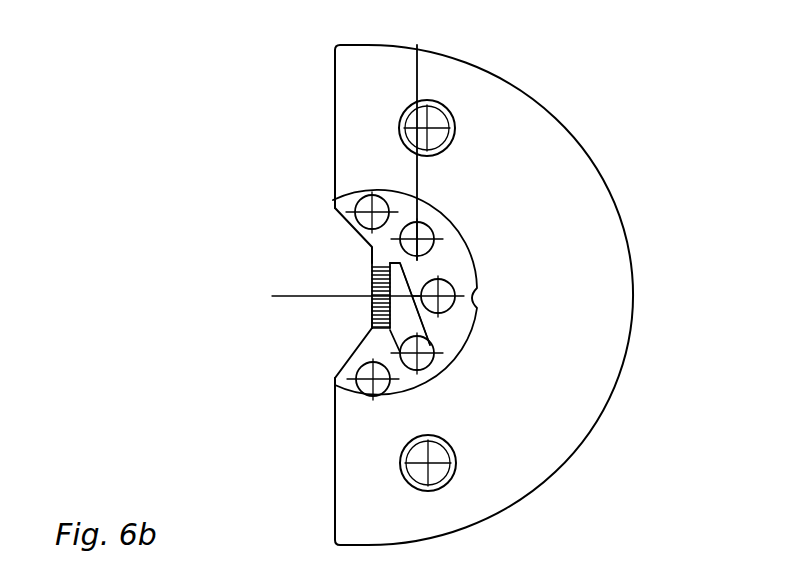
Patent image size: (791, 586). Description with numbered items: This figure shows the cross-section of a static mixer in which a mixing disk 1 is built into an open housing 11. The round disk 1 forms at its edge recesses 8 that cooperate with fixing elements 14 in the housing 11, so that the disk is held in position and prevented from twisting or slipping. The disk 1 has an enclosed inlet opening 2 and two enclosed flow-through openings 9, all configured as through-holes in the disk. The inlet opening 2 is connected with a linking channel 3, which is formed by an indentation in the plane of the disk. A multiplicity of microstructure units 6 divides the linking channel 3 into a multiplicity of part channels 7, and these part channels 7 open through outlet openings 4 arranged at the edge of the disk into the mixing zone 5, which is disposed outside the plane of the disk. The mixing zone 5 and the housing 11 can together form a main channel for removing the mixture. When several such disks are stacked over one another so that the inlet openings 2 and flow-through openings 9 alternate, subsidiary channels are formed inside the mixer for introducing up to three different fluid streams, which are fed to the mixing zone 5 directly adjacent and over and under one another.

The mixing disk 1 is at (447, 343).
The inlet opening 2 is at (430, 345).
The linking channel 3 is at (405, 317).
The outlet openings 4 is at (371, 270).
The mixing zone 5 is at (338, 278).
The microstructure units 6 is at (368, 338).
The part channels 7 is at (370, 310).
The recesses 8 is at (360, 394).
The flow-through openings 9 is at (450, 283).
The housing 11 is at (512, 110).
The fixing elements 14 is at (362, 192).